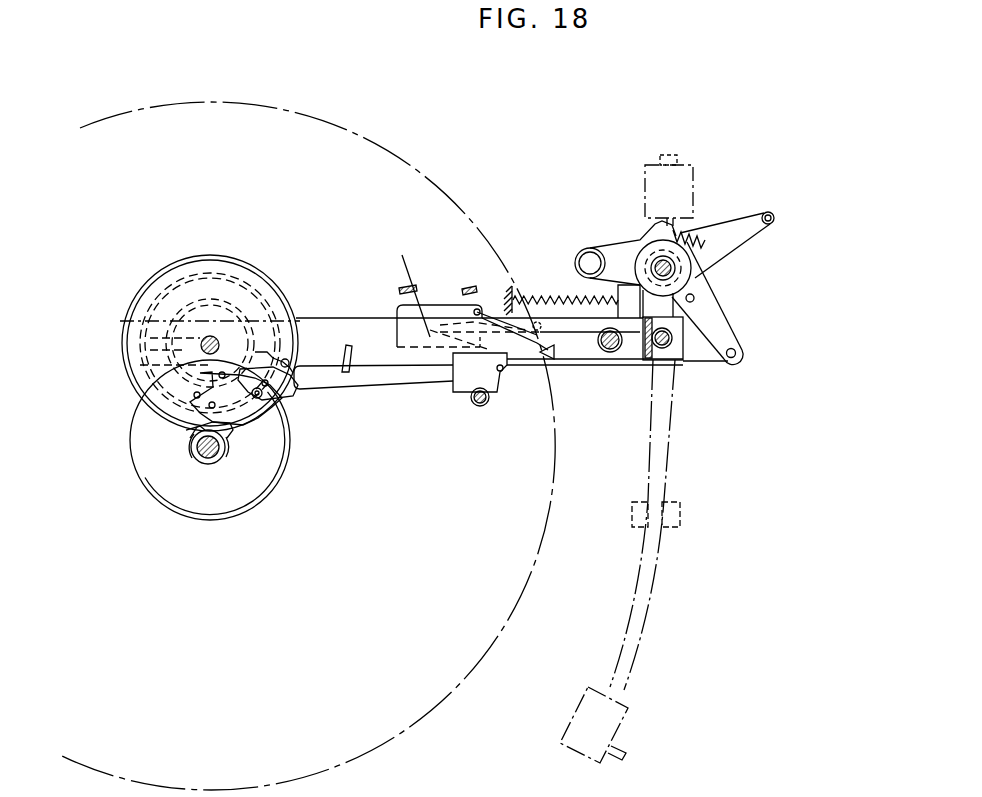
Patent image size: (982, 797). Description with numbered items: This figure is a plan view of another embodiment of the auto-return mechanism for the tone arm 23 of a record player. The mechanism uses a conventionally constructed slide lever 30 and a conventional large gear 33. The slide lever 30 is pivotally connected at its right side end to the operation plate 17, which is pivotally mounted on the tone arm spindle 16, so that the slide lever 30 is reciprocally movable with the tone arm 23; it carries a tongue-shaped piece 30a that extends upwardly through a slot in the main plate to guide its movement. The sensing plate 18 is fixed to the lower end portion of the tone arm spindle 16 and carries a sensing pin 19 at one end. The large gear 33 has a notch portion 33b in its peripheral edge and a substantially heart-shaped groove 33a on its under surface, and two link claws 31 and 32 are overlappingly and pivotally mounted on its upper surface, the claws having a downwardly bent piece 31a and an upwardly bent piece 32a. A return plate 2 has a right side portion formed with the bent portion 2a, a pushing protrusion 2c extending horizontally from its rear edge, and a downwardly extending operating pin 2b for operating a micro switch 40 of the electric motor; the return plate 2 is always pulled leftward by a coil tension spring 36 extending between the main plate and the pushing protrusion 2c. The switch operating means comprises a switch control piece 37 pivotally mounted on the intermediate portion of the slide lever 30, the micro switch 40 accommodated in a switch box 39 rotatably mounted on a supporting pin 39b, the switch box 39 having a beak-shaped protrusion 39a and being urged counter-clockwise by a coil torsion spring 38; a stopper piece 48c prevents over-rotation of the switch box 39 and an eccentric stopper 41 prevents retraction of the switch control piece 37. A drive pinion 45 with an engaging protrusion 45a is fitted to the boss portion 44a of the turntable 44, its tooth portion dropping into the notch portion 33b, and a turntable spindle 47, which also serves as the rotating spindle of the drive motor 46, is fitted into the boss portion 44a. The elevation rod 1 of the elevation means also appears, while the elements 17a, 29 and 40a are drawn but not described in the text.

The elevation rod 1 is at (672, 355).
The return plate 2 is at (318, 318).
The bent portion 2a is at (651, 358).
The operating pin 2b is at (541, 327).
The pushing protrusion 2c is at (617, 287).
The tone arm spindle 16 is at (650, 263).
The operation plate 17 is at (713, 317).
The lever hole 17a is at (695, 297).
The sensing plate 18 is at (727, 247).
The sensing pin 19 is at (773, 216).
The tone arm 23 is at (642, 637).
The cable clamp 29 is at (677, 523).
The slide lever 30 is at (398, 378).
The tongue-shaped piece 30a is at (343, 361).
The link claw 31 is at (287, 388).
The downwardly bent piece 31a is at (273, 352).
The link claw 32 is at (277, 407).
The upwardly bent piece 32a is at (193, 428).
The large gear 33 is at (236, 271).
The heart-shaped groove 33a is at (122, 321).
The notch portion 33b is at (223, 442).
The coil tension spring 36 is at (536, 322).
The switch control piece 37 is at (487, 383).
The coil torsion spring 38 is at (404, 275).
The switch box 39 is at (430, 318).
The beak-shaped protrusion 39a is at (556, 352).
The supporting pin 39b is at (421, 335).
The micro switch 40 is at (443, 313).
The link portion 40a is at (488, 350).
The eccentric stopper 41 is at (487, 403).
The turntable 44 is at (527, 520).
The boss portion 44a is at (197, 462).
The drive pinion 45 is at (209, 462).
The engaging protrusion 45a is at (190, 447).
The drive motor 46 is at (253, 480).
The turntable spindle 47 is at (226, 457).
The stopper piece 48c is at (473, 283).